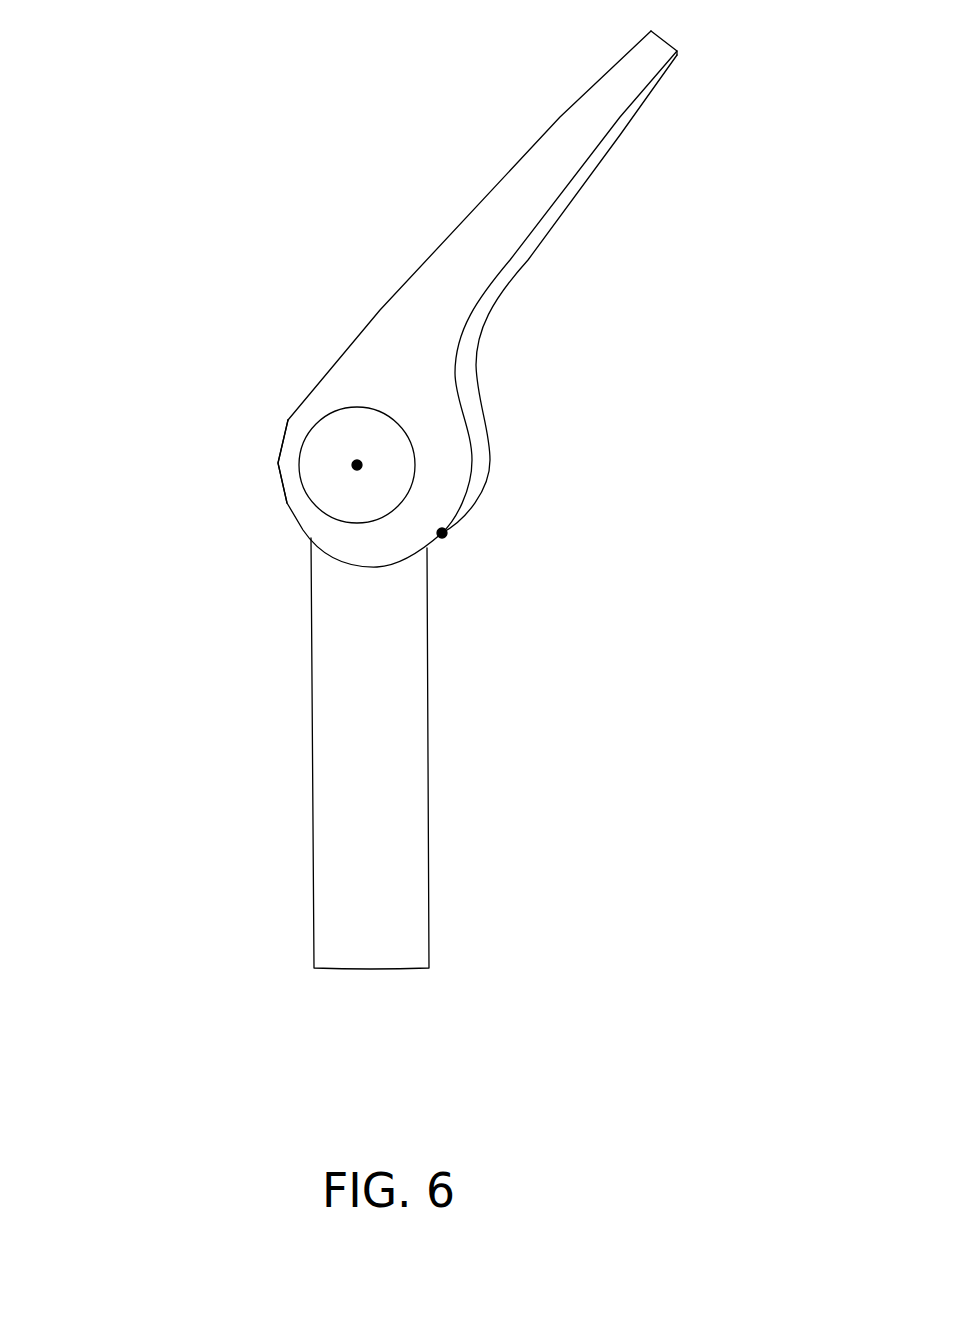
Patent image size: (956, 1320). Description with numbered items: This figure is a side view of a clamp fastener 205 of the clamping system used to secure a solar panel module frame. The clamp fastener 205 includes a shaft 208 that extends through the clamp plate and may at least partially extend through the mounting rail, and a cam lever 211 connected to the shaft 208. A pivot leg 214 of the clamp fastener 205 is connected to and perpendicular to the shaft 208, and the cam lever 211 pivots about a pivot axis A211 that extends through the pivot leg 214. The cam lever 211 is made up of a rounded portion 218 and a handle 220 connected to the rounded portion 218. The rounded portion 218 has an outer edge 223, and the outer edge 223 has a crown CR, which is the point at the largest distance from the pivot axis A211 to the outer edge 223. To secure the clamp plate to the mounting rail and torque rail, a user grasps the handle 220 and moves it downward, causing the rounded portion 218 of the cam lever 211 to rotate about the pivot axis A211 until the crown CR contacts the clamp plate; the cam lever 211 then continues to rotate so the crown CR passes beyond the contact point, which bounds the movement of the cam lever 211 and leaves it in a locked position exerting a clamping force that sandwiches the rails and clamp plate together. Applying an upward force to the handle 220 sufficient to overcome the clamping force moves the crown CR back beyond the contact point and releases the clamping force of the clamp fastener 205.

The clamp fastener 205 is at (435, 500).
The shaft 208 is at (407, 760).
The cam lever 211 is at (528, 282).
The pivot leg 214 is at (357, 432).
The rounded portion 218 is at (317, 520).
The handle 220 is at (618, 92).
The outer edge 223 is at (288, 505).
The pivot axis A211 is at (357, 465).
The crown CR is at (442, 533).